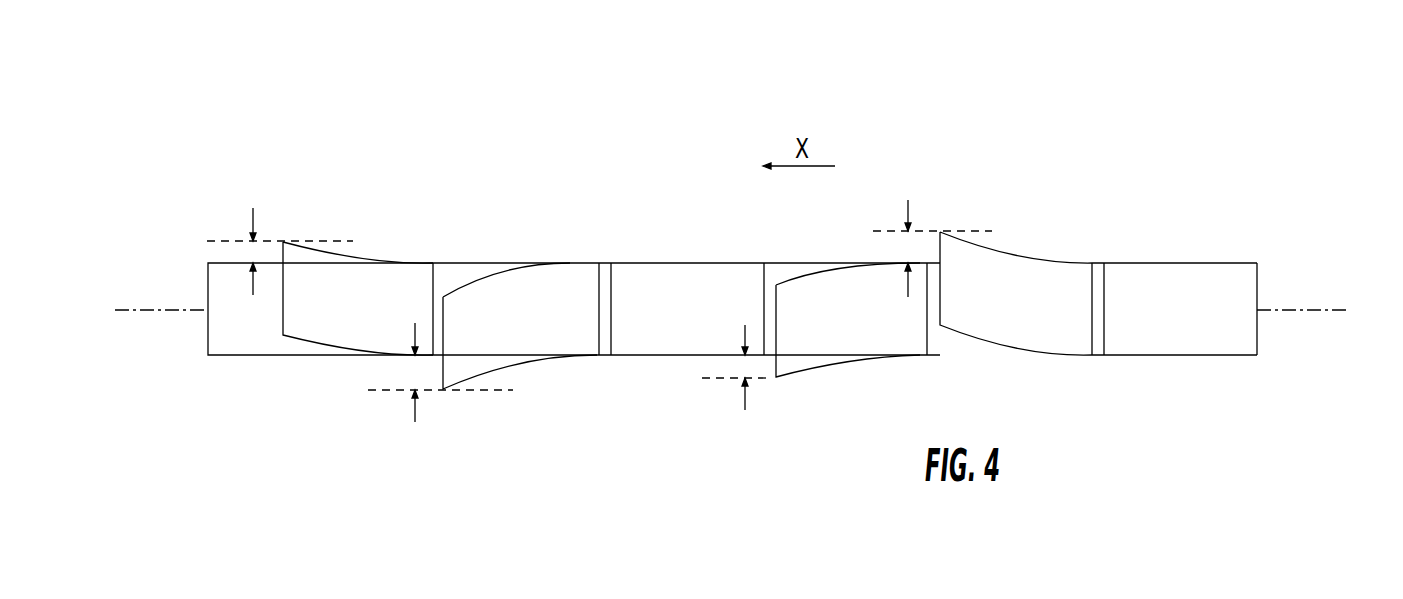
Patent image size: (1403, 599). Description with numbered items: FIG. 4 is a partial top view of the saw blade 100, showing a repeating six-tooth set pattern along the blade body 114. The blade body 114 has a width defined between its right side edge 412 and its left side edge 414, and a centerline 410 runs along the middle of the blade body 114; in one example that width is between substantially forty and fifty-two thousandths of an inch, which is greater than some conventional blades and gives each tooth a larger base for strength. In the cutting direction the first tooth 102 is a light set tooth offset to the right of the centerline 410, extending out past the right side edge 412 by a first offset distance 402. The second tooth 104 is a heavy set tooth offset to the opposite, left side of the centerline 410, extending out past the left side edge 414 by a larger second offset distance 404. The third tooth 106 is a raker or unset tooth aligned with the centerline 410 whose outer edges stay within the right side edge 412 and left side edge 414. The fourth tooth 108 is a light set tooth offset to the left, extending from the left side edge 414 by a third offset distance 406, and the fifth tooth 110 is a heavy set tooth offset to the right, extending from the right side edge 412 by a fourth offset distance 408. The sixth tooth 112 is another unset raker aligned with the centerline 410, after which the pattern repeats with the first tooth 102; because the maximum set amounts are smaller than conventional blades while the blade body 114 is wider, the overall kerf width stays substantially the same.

The saw blade 100 is at (1110, 101).
The first tooth 102 is at (395, 323).
The second tooth 104 is at (580, 323).
The third tooth 106 is at (726, 323).
The fourth tooth 108 is at (893, 323).
The fifth tooth 110 is at (1070, 323).
The sixth tooth 112 is at (1228, 323).
The blade body 114 is at (1257, 280).
The first offset distance 402 is at (252, 253).
The second offset distance 404 is at (415, 373).
The third offset distance 406 is at (745, 367).
The fourth offset distance 408 is at (912, 248).
The centerline 410 is at (751, 312).
The right side edge 412 is at (1158, 263).
The left side edge 414 is at (1160, 355).